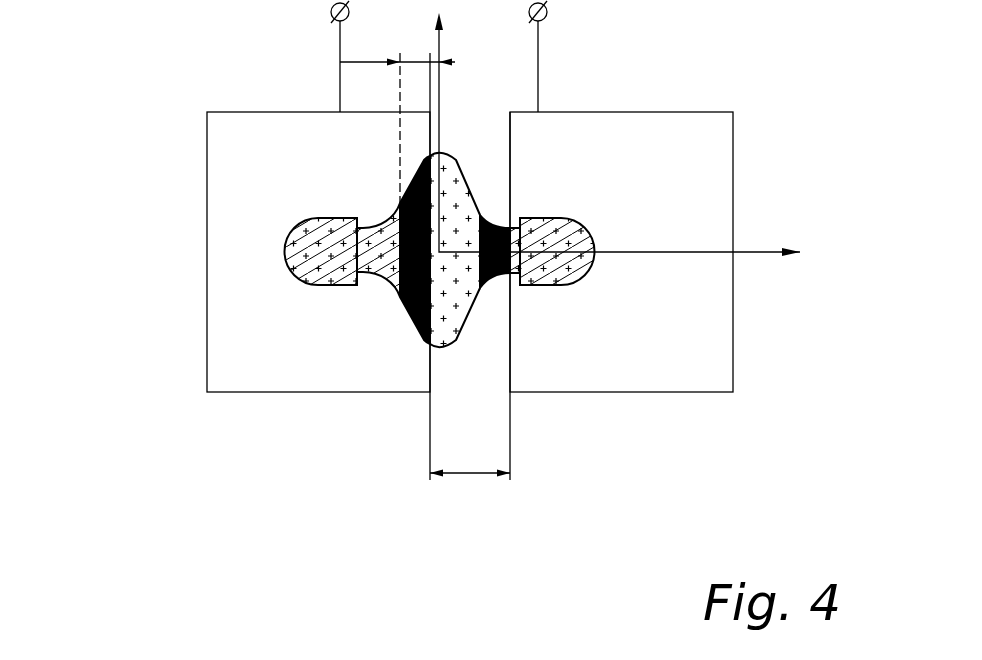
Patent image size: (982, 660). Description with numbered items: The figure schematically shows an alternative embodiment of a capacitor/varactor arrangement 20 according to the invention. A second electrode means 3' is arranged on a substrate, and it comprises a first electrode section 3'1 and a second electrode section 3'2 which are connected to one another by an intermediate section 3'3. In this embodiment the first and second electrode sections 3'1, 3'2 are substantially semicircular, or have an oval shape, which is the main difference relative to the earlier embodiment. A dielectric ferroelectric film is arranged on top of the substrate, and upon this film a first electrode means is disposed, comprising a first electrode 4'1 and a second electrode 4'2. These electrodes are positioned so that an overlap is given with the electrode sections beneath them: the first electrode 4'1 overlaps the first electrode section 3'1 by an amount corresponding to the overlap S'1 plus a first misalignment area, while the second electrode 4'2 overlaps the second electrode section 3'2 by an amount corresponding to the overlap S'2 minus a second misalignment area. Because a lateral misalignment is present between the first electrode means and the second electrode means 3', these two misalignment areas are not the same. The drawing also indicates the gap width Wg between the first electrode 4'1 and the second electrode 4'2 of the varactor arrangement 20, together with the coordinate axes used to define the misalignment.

The second electrode means 3' is at (475, 193).
The first electrode section 3'1 is at (237, 209).
The second electrode section 3'2 is at (646, 214).
The intermediate section 3'3 is at (411, 356).
The first electrode 4'1 is at (274, 224).
The second electrode 4'2 is at (646, 225).
The varactor arrangement 20 is at (242, 455).
The overlap S1' S'1 is at (318, 384).
The overlap S2' S'2 is at (587, 382).
The gap width Wg is at (470, 266).